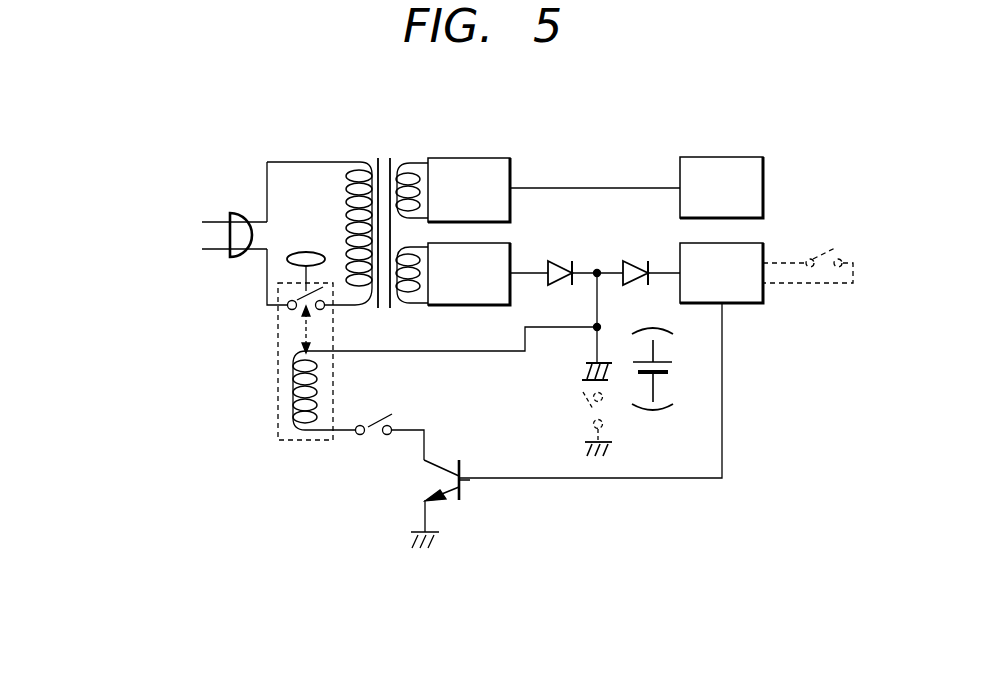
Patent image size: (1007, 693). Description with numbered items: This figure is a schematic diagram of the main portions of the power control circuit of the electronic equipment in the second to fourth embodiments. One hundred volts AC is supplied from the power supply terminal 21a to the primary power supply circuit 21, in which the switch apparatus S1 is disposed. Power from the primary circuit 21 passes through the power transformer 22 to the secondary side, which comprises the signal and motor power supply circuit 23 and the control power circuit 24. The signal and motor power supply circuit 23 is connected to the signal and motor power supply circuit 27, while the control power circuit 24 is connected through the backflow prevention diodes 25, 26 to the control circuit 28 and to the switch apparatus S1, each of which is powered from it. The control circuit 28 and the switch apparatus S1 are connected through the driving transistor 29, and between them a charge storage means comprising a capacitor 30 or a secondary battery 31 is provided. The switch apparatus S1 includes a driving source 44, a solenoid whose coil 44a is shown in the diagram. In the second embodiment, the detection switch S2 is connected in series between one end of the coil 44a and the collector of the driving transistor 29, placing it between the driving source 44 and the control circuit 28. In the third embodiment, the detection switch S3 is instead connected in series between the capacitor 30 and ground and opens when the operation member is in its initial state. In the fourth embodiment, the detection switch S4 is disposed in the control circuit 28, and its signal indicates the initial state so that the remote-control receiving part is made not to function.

The primary power supply circuit 21 is at (319, 169).
The power supply terminal 21a is at (234, 204).
The power transformer 22 is at (383, 202).
The signal and motor power supply circuit 23 is at (453, 159).
The control power circuit 24 is at (453, 318).
The backflow prevention diode 25 is at (564, 245).
The backflow prevention diode 26 is at (639, 245).
The signal and motor power supply circuit 27 is at (746, 160).
The control circuit 28 is at (746, 245).
The driving transistor 29 is at (405, 504).
The capacitor 30 is at (558, 371).
The secondary battery 31 is at (714, 369).
The driving source 44 is at (339, 361).
The coil 44a is at (273, 390).
The switch apparatus S1 is at (256, 303).
The detection switch S2 is at (337, 459).
The detection switch S3 is at (558, 424).
The detection switch S4 is at (822, 232).